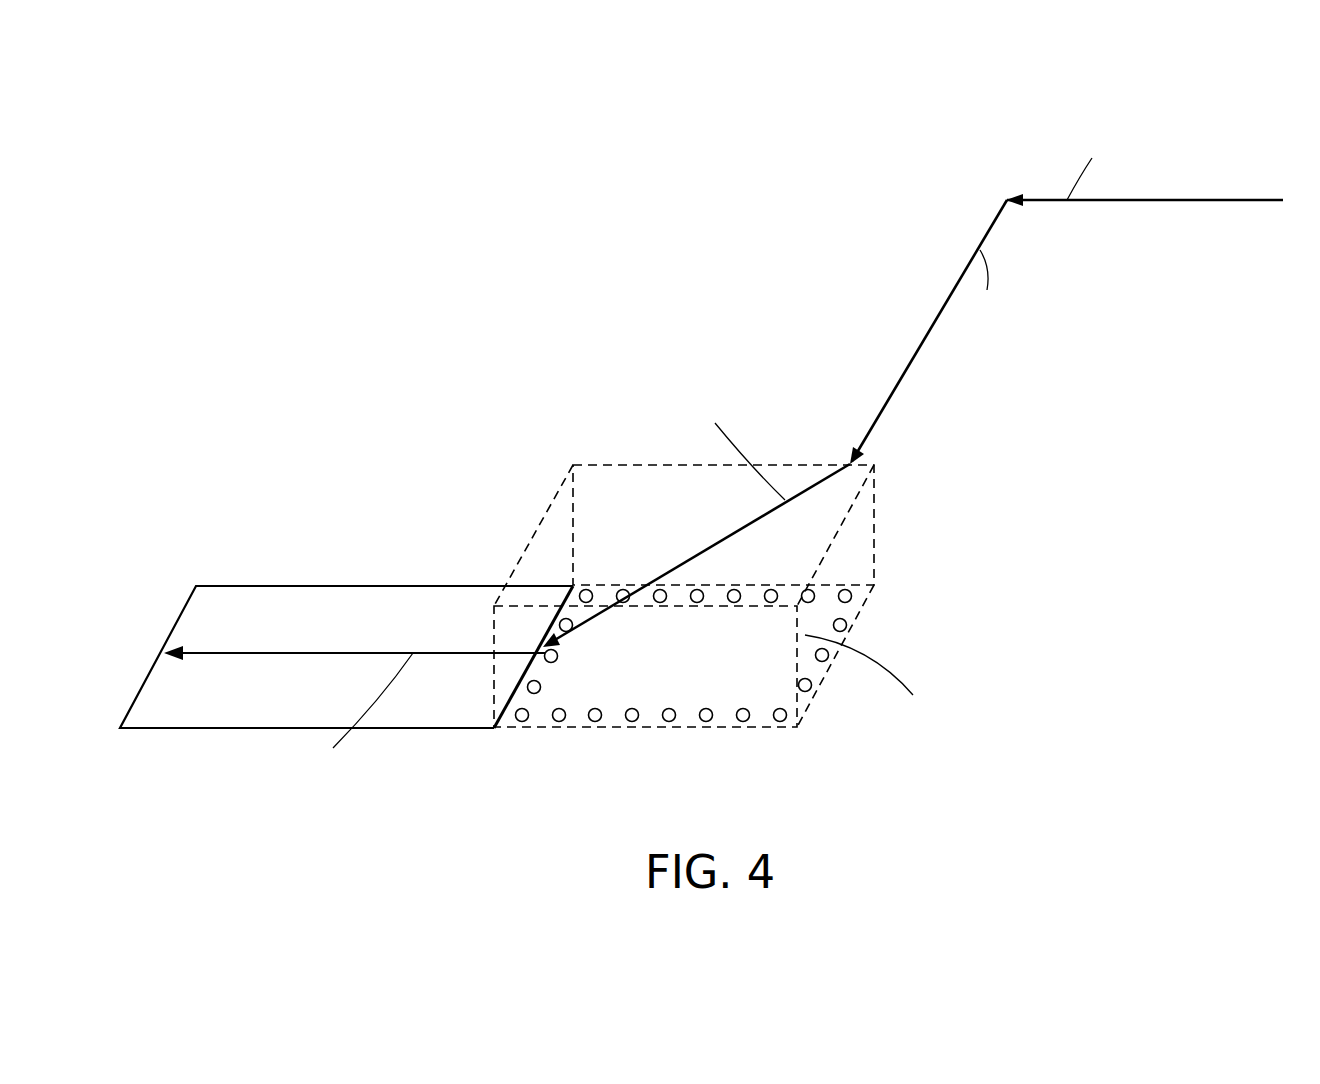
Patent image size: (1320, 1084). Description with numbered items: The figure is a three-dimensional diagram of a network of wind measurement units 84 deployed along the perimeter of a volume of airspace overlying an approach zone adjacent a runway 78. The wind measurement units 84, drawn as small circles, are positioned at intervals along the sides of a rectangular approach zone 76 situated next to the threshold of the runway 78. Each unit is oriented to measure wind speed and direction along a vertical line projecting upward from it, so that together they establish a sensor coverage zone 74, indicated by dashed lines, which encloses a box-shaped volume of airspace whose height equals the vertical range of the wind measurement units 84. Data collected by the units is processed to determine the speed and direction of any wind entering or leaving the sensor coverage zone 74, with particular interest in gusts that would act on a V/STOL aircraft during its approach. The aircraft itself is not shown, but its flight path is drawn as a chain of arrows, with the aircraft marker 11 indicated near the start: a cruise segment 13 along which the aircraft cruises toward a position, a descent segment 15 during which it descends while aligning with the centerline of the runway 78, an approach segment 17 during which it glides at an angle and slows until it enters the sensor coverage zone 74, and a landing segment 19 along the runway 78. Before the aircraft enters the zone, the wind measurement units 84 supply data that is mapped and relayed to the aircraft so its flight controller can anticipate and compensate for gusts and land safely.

The aircraft 11 is at (1038, 190).
The cruise segment 13 is at (1217, 200).
The descent segment 15 is at (912, 356).
The approach segment 17 is at (698, 550).
The landing segment 19 is at (345, 652).
The sensor coverage zone 74 is at (877, 495).
The rectangular approach zone 76 is at (855, 622).
The runway 78 is at (303, 585).
The wind measurement units 84 is at (748, 727).